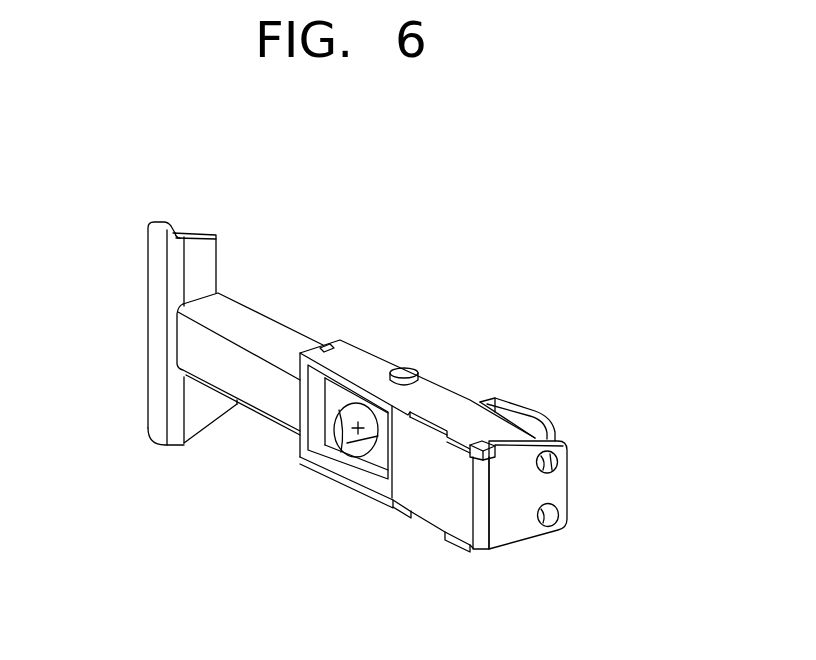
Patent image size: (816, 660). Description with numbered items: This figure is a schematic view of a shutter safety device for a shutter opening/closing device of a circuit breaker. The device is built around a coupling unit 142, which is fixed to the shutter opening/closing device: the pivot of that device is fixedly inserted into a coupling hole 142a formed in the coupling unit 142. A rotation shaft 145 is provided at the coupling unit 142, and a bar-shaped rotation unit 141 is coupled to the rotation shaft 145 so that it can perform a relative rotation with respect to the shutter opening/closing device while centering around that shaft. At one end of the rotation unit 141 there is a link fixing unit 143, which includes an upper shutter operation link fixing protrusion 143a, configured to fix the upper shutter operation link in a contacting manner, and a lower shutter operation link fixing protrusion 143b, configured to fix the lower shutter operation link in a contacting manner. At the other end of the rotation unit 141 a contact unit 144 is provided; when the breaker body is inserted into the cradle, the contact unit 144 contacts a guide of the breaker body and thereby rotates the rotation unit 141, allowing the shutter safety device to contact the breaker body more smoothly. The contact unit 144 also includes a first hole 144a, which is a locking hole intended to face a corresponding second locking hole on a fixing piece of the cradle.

The rotation unit 141 is at (274, 412).
The coupling unit 142 is at (494, 400).
The coupling hole 142a is at (352, 441).
The link fixing unit 143 is at (155, 325).
The upper shutter operation link fixing protrusion 143a is at (167, 449).
The lower shutter operation link fixing protrusion 143b is at (192, 231).
The contact unit 144 is at (558, 490).
The first hole 144a is at (550, 520).
The rotation shaft 145 is at (404, 372).